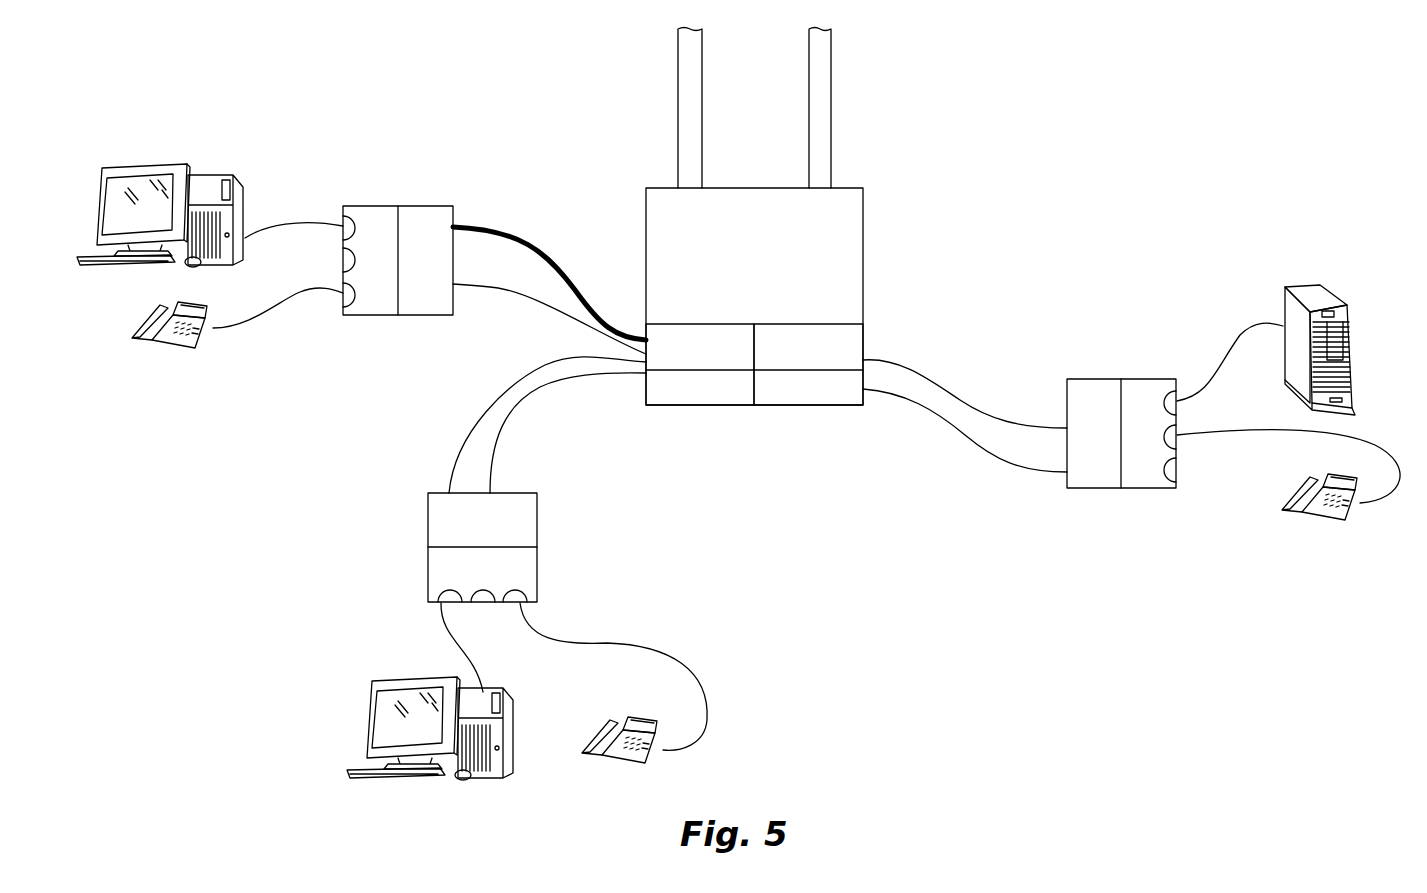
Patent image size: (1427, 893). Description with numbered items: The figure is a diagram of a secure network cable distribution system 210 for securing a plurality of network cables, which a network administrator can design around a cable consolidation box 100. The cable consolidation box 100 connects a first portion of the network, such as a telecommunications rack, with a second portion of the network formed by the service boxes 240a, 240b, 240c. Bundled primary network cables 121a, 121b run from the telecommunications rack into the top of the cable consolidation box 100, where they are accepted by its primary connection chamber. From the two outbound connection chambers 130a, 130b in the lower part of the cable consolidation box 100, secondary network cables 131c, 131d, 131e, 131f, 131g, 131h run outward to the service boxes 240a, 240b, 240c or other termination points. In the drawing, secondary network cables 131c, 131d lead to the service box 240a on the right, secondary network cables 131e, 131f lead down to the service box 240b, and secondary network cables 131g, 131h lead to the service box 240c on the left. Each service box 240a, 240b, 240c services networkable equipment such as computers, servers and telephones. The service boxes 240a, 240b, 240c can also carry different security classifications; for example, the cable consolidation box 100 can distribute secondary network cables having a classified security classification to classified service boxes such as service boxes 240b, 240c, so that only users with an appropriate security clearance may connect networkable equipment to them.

The secure network cable distribution system 210 is at (333, 48).
The cable consolidation box 100 is at (794, 326).
The outbound connection chamber 130a is at (803, 426).
The outbound connection chamber 130b is at (712, 423).
The primary network cable 121a is at (821, 124).
The primary network cable 121b is at (692, 117).
The service box 240a is at (1092, 477).
The service box 240b is at (520, 532).
The service box 240c is at (425, 220).
The secondary network cable 131c is at (975, 403).
The secondary network cable 131d is at (934, 410).
The secondary network cable 131e is at (498, 455).
The secondary network cable 131f is at (450, 476).
The secondary network cable 131g is at (498, 290).
The secondary network cable 131h is at (505, 222).